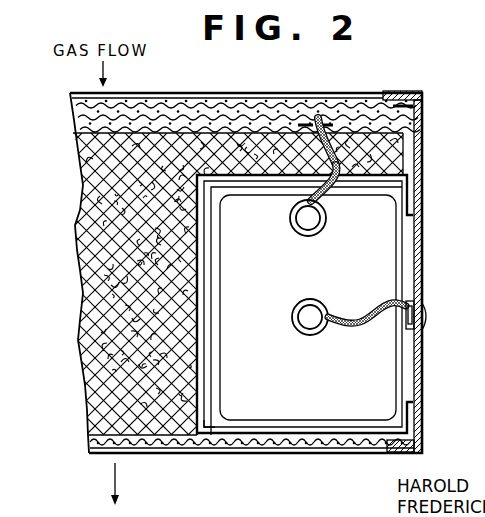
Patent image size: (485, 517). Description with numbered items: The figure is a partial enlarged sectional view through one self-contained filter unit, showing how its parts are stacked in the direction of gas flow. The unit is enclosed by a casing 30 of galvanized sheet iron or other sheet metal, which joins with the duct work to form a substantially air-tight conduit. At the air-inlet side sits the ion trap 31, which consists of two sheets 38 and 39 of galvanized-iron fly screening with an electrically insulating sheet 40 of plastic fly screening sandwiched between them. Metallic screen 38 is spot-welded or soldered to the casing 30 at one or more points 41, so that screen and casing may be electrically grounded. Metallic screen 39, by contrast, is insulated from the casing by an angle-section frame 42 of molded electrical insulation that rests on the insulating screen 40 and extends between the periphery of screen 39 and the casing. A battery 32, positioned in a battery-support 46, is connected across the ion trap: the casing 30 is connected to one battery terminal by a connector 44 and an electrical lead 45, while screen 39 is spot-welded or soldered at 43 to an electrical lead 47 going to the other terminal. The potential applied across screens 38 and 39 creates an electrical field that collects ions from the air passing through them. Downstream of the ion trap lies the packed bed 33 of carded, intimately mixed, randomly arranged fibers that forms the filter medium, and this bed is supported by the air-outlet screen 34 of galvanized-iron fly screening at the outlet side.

The casing 30 is at (422, 163).
The ion trap 31 is at (56, 117).
The battery 32 is at (392, 259).
The packed bed 33 is at (115, 289).
The air-outlet screen 34 is at (177, 440).
The metallic screen 38 is at (255, 100).
The metallic screen 39 is at (165, 133).
The insulating sheet 40 is at (290, 124).
The welded points 41 is at (423, 99).
The angle-section frame 42 is at (414, 128).
The weld 43 is at (325, 122).
The connector 44 is at (428, 312).
The electrical lead 45 is at (373, 318).
The battery-support 46 is at (208, 428).
The electrical lead 47 is at (404, 172).